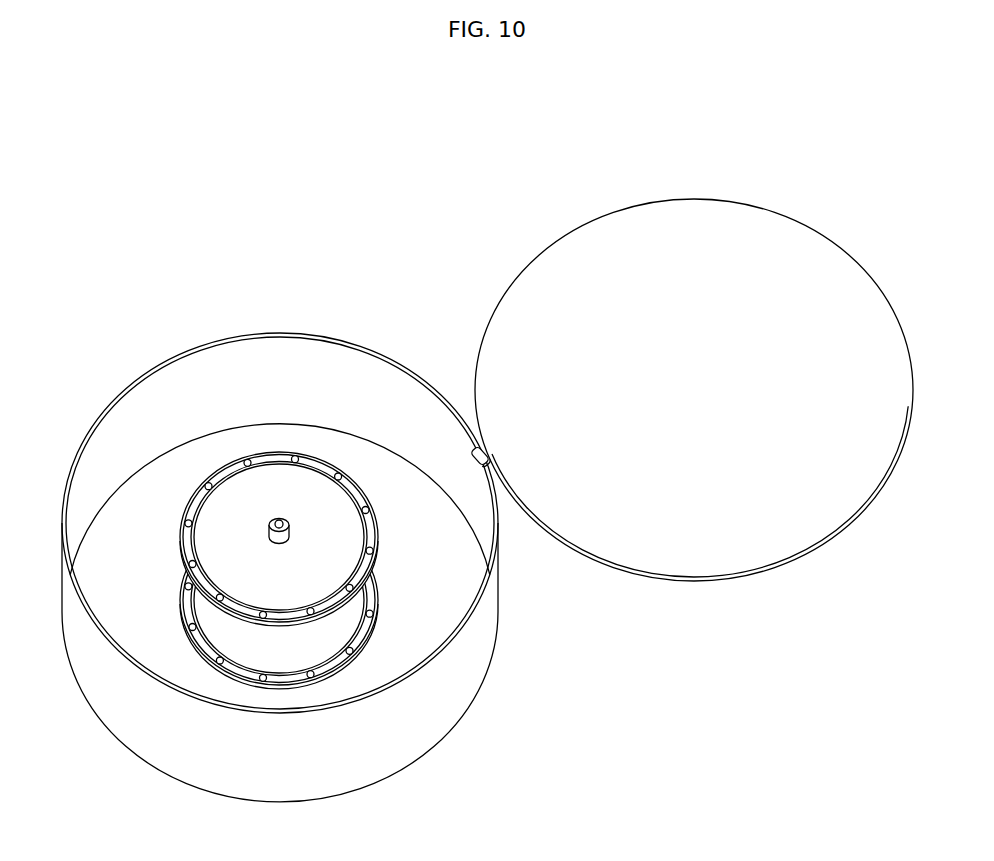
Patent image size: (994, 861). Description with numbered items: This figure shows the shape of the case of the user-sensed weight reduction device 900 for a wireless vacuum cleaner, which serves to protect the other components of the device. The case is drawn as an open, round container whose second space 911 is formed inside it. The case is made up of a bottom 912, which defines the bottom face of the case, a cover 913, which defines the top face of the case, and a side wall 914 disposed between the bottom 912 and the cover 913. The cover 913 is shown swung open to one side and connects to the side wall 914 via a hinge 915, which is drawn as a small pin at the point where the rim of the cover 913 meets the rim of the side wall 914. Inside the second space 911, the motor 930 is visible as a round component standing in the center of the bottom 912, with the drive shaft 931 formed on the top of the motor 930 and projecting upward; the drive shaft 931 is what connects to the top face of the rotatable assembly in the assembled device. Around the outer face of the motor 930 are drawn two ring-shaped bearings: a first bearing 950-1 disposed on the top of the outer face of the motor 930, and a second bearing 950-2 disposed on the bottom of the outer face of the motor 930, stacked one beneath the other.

The user-sensed weight reduction device 900 is at (61, 101).
The second space 911 is at (156, 617).
The bottom 912 is at (357, 457).
The cover 913 is at (720, 553).
The side wall 914 is at (492, 598).
The hinge 915 is at (477, 446).
The motor 930 is at (238, 507).
The drive shaft 931 is at (284, 519).
The first bearing 950-1 is at (327, 612).
The second bearing 950-2 is at (212, 665).